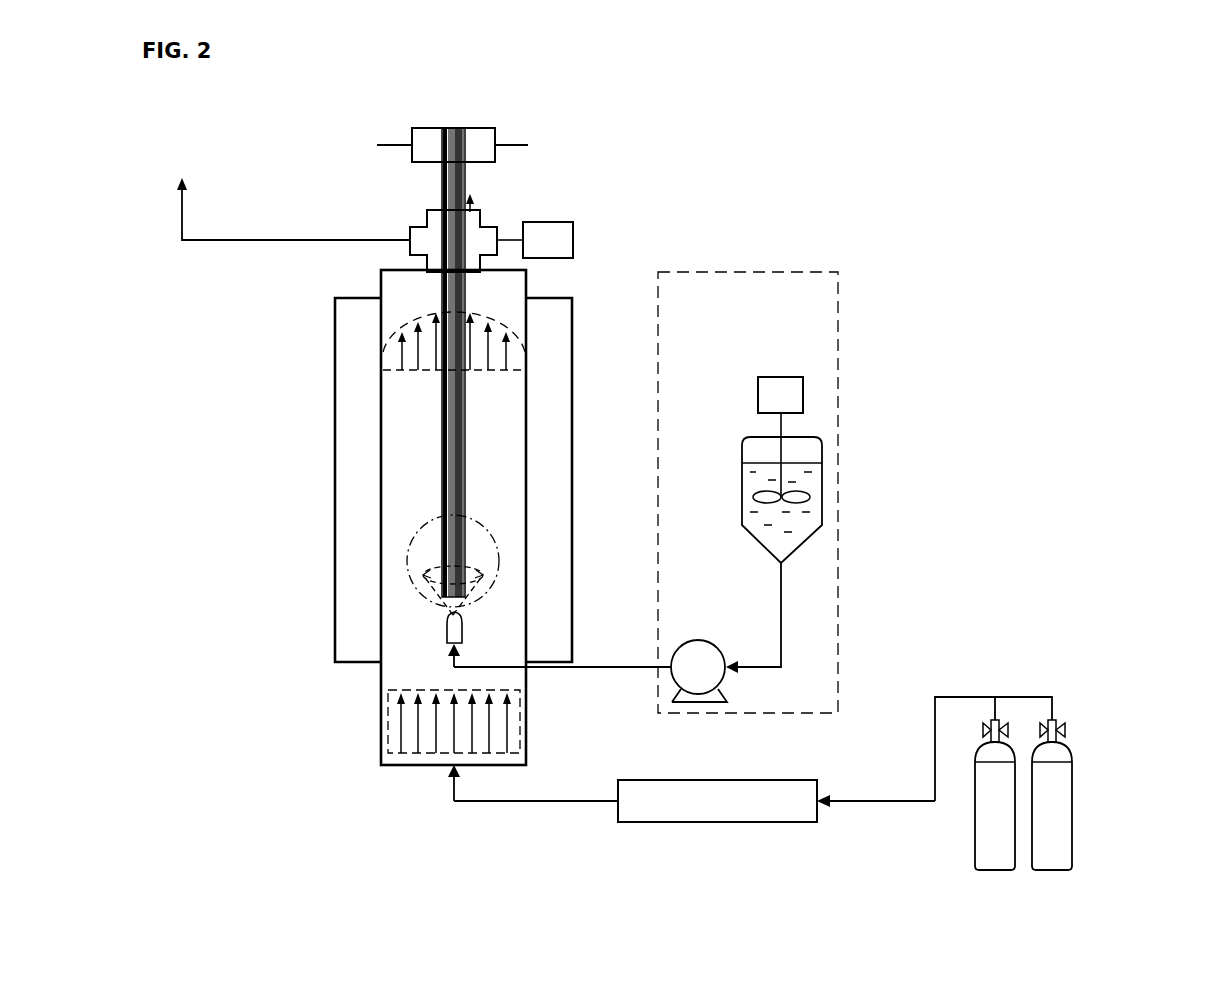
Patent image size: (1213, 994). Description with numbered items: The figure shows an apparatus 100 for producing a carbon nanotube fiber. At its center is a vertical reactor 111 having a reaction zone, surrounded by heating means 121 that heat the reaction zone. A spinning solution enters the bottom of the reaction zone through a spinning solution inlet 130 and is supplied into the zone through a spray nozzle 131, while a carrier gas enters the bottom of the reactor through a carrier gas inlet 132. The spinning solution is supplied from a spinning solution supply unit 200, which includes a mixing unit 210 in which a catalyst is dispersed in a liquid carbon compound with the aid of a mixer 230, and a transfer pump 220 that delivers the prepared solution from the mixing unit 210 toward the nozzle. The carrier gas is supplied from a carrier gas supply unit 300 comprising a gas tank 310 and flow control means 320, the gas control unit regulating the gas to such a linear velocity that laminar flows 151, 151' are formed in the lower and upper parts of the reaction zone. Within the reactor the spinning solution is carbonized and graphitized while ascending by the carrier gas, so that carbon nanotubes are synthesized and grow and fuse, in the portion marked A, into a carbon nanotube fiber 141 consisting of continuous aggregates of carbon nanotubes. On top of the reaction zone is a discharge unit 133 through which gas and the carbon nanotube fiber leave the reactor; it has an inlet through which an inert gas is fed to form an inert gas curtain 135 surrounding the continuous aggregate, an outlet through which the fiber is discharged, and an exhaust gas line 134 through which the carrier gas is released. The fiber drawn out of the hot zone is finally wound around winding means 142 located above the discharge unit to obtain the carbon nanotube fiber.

The coating apparatus 100 is at (398, 207).
The vertical reactor 111 is at (380, 430).
The heating means 121 is at (337, 300).
The spinning solution inlet 130 is at (456, 666).
The spray nozzle 131 is at (447, 630).
The carrier gas inlet 132 is at (450, 767).
The discharge unit 133 is at (500, 228).
The exhaust gas line 134 is at (213, 243).
The inert gas curtain 135 is at (474, 206).
The carbon nanotube fiber 141 is at (442, 495).
The winding means 142 is at (497, 130).
The laminar flow 151 is at (403, 721).
The laminar flow 151' is at (390, 341).
The portion A is at (408, 558).
The spinning solution supply unit 200 is at (820, 258).
The mixing unit 210 is at (822, 477).
The transfer pump 220 is at (706, 640).
The mixer 230 is at (803, 395).
The carrier gas supply unit 300 is at (1096, 715).
The gas tank 310 is at (1072, 815).
The flow control means 320 is at (755, 825).